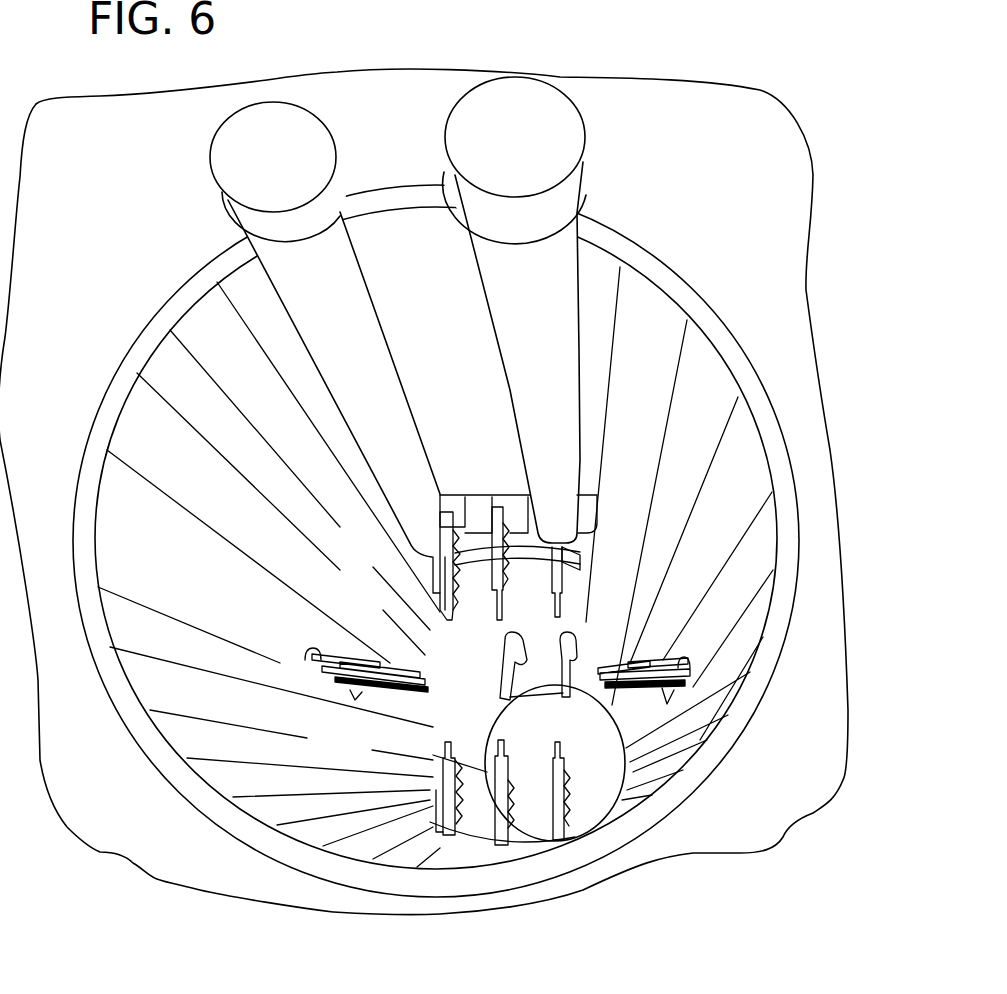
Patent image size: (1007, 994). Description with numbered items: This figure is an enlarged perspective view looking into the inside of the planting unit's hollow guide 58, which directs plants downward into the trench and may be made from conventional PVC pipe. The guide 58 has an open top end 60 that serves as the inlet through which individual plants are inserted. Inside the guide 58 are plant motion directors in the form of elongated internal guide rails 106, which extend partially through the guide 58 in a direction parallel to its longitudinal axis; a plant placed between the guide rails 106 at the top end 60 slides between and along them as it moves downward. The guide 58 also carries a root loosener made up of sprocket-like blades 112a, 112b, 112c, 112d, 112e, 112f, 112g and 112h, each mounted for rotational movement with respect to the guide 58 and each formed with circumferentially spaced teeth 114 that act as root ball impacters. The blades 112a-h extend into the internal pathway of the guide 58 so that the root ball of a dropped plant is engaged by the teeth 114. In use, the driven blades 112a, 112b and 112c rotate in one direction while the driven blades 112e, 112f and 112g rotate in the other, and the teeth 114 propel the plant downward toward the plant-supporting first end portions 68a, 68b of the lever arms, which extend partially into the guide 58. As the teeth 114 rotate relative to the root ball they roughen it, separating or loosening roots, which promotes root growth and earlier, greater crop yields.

The guide 58 is at (143, 333).
The open top end 60 is at (97, 412).
The internal guide rails 106 is at (312, 298).
The blade 112a is at (445, 845).
The blade 112b is at (505, 847).
The blade 112c is at (567, 805).
The blade 112d is at (688, 683).
The blade 112e is at (442, 497).
The blade 112f is at (500, 505).
The blade 112g is at (570, 592).
The blade 112h is at (350, 663).
The teeth 114 is at (432, 600).
The first end portion 68a is at (570, 722).
The first end portion 68b is at (500, 718).